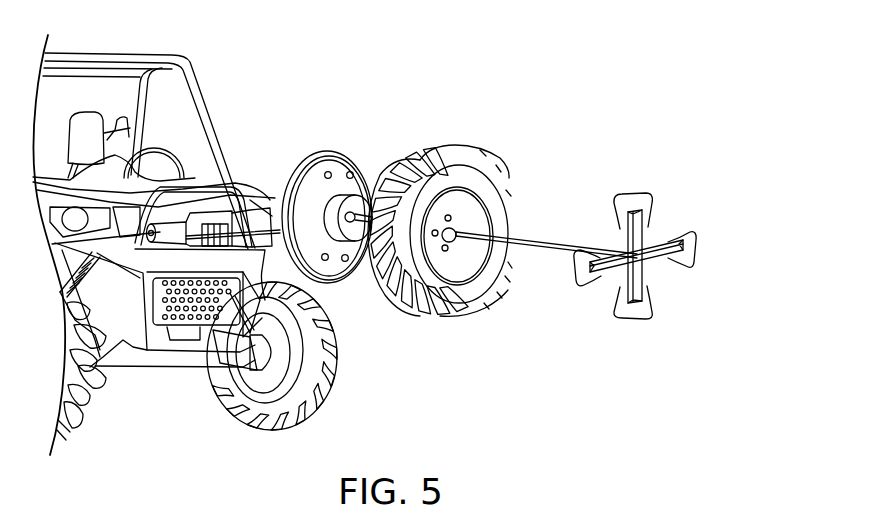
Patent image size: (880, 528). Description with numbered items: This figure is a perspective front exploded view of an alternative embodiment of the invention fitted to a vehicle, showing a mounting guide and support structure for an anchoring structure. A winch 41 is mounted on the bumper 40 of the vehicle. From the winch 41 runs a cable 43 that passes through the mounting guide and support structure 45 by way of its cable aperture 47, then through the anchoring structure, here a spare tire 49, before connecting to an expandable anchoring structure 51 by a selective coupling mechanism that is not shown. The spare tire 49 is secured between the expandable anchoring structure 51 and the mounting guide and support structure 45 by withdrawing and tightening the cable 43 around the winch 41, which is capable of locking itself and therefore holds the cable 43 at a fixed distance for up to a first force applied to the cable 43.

The bumper 40 is at (163, 258).
The winch 41 is at (206, 224).
The cable 43 is at (534, 243).
The mounting guide and support structure 45 is at (308, 186).
The cable aperture 47 is at (358, 196).
The spare tire 49 is at (433, 284).
The expandable anchoring structure 51 is at (683, 190).